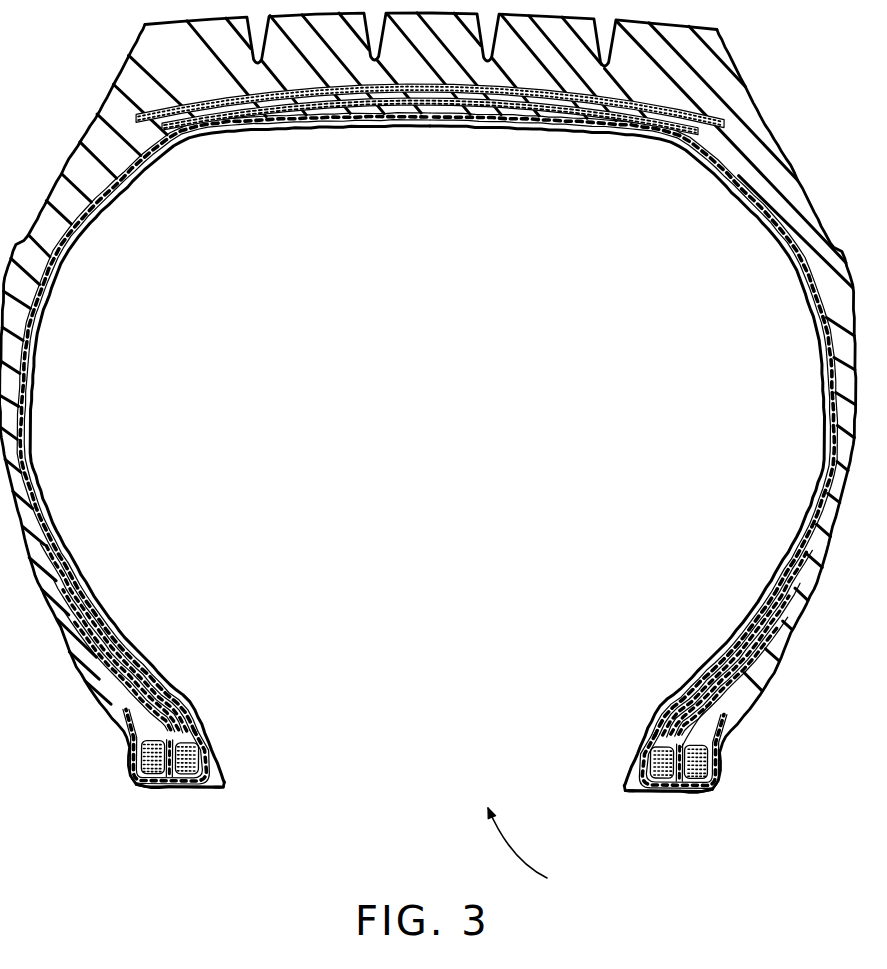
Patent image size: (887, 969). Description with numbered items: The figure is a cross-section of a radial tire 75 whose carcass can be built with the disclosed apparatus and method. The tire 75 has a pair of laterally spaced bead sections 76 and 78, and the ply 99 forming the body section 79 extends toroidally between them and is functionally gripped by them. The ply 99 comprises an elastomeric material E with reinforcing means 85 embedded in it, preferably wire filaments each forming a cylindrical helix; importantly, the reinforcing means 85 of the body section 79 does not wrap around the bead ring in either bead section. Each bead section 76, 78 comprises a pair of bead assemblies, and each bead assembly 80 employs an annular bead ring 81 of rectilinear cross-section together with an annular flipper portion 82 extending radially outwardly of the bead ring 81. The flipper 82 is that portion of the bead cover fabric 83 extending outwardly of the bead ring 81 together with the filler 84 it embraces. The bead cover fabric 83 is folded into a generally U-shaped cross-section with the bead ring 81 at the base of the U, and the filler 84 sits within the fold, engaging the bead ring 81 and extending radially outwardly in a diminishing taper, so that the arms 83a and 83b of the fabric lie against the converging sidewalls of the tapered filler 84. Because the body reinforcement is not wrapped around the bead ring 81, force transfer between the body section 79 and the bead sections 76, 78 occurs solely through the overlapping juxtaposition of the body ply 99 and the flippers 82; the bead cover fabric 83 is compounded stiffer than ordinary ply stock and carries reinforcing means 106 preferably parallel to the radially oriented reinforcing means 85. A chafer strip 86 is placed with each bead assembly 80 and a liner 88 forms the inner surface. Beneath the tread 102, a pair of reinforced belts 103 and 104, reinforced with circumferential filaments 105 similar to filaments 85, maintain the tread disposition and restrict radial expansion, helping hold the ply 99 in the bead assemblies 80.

The radial tire 75 is at (529, 853).
The bead section 76 is at (166, 773).
The bead section 78 is at (683, 783).
The body section 79 is at (429, 408).
The bead assembly 80 is at (433, 747).
The bead ring 81 is at (137, 782).
The flipper portion 82 is at (107, 687).
The bead cover fabric 83 is at (123, 703).
The arm of bead cover fabric 83a is at (670, 713).
The arm of bead cover fabric 83b is at (670, 735).
The filler 84 is at (123, 720).
The reinforcing means 85 is at (36, 350).
The chafer strip 86 is at (193, 786).
The liner 88 is at (131, 648).
The ply 99 is at (0, 0).
The tread 102 is at (708, 72).
The reinforced belt 103 is at (708, 113).
The reinforced belt 104 is at (658, 126).
The filaments 105 is at (476, 96).
The reinforcing means 106 is at (123, 760).
The elastomeric material E is at (28, 379).